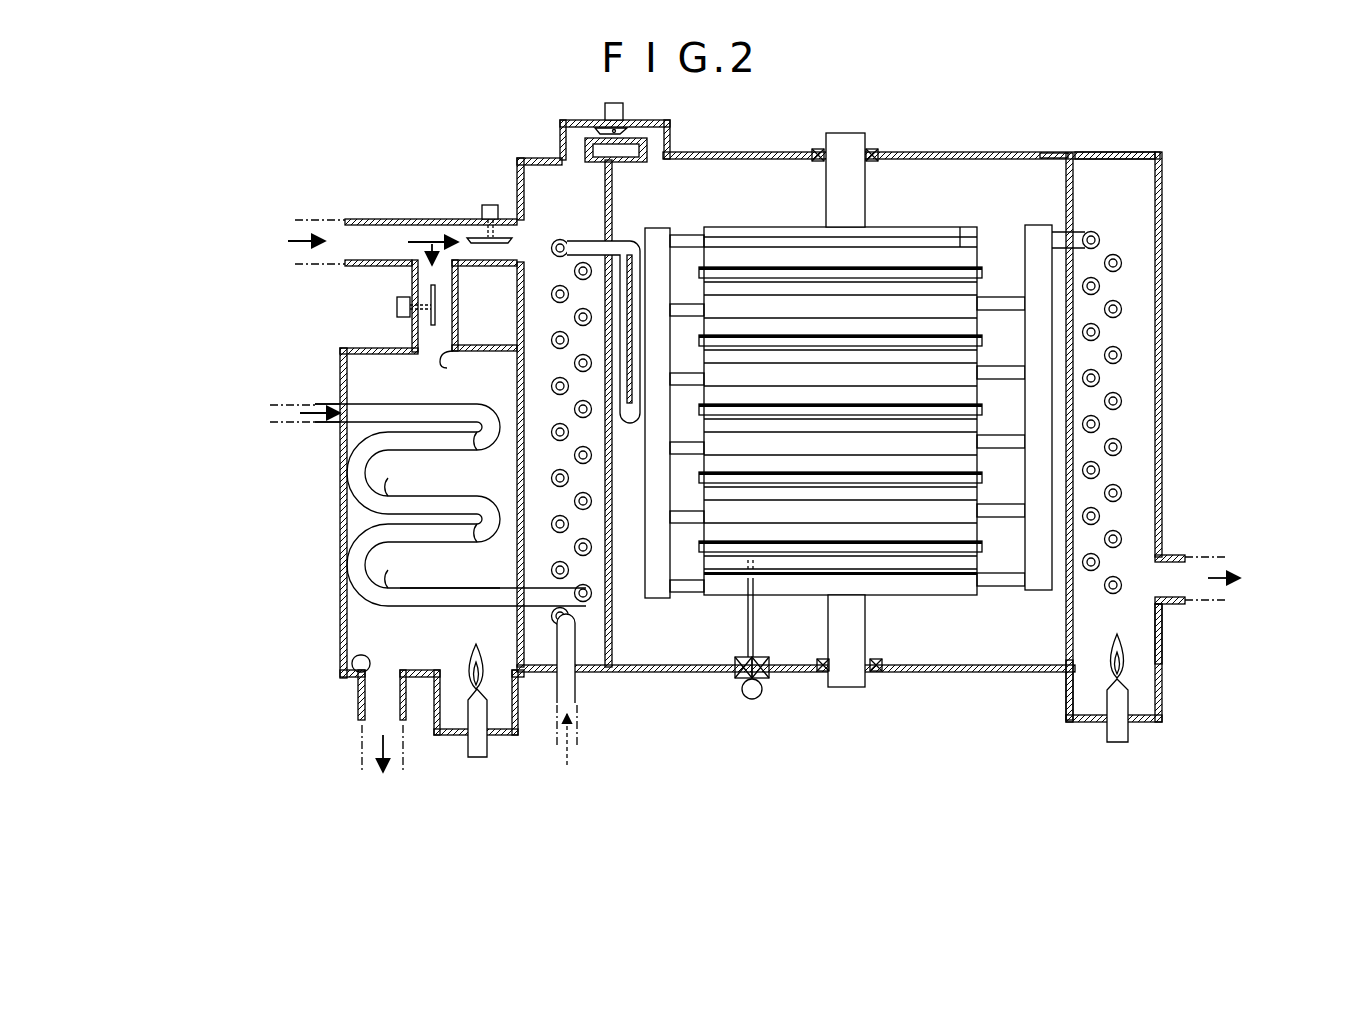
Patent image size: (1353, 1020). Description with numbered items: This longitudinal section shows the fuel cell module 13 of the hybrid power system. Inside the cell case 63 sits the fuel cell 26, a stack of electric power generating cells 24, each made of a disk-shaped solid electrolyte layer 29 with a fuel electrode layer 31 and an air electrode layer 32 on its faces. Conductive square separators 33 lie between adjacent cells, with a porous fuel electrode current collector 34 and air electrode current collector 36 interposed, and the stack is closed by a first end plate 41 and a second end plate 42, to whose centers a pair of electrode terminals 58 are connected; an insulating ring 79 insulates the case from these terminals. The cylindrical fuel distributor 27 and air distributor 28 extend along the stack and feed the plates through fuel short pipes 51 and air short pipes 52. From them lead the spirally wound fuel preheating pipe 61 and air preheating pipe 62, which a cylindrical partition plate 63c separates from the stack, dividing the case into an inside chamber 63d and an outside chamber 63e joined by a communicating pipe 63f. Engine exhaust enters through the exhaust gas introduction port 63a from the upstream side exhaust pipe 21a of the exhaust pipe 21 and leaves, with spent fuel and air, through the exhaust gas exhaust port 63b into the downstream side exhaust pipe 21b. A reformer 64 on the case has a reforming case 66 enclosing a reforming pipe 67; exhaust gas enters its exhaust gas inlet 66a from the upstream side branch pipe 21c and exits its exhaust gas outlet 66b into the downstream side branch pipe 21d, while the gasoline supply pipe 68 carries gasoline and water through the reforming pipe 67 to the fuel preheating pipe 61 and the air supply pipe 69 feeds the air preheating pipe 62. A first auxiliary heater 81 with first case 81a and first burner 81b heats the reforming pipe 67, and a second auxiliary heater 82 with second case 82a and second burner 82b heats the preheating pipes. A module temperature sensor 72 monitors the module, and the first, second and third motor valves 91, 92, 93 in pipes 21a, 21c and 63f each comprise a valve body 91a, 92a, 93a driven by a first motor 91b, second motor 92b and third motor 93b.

The fuel cell module 13 is at (1166, 236).
The exhaust pipe 21 is at (360, 218).
The upstream side exhaust pipe 21a is at (405, 219).
The downstream side exhaust pipe 21b is at (1178, 557).
The upstream side branch pipe 21c is at (460, 297).
The downstream side branch pipe 21d is at (360, 690).
The electric power generating cell 24 is at (857, 413).
The fuel cell 26 is at (964, 223).
The fuel distributor 27 is at (1036, 225).
The air distributor 28 is at (652, 227).
The solid electrolyte layer 29 is at (772, 263).
The fuel electrode layer 31 is at (803, 266).
The air electrode layer 32 is at (745, 263).
The separator 33 is at (967, 307).
The fuel electrode current collector 34 is at (980, 490).
The air electrode current collector 36 is at (978, 258).
The first end plate 41 is at (918, 228).
The second end plate 42 is at (800, 594).
The fuel short pipe 51 is at (996, 310).
The air short pipe 52 is at (678, 249).
The electrode terminal 58 is at (853, 199).
The fuel preheating pipe 61 is at (1096, 234).
The air preheating pipe 62 is at (565, 240).
The cell case 63 is at (1164, 280).
The exhaust gas introduction port 63a is at (523, 232).
The exhaust gas exhaust port 63b is at (1148, 592).
The cylindrical partition plate 63c is at (1074, 184).
The inside chamber 63d is at (1026, 160).
The outside chamber 63e is at (1121, 158).
The communicating pipe 63f is at (558, 143).
The reformer 64 is at (342, 644).
The reforming case 66 is at (377, 497).
The exhaust gas inlet 66a is at (441, 358).
The exhaust gas outlet 66b is at (355, 668).
The reforming pipe 67 is at (398, 607).
The gasoline supply pipe 68 is at (325, 403).
The air supply pipe 69 is at (576, 686).
The module temperature sensor 72 is at (748, 615).
The insulating ring 79 is at (868, 162).
The first auxiliary heater 81 is at (478, 718).
The first case 81a is at (510, 737).
The first burner 81b is at (478, 758).
The second auxiliary heater 82 is at (1066, 706).
The second case 82a is at (1069, 684).
The second burner 82b is at (1105, 731).
The first motor valve 91 is at (662, 132).
The valve body 91a is at (628, 131).
The first motor 91b is at (625, 110).
The second motor valve 92 is at (474, 186).
The valve body 92a is at (505, 237).
The second motor 92b is at (480, 206).
The third motor valve 93 is at (372, 301).
The valve body 93a is at (431, 290).
The third motor 93b is at (397, 307).